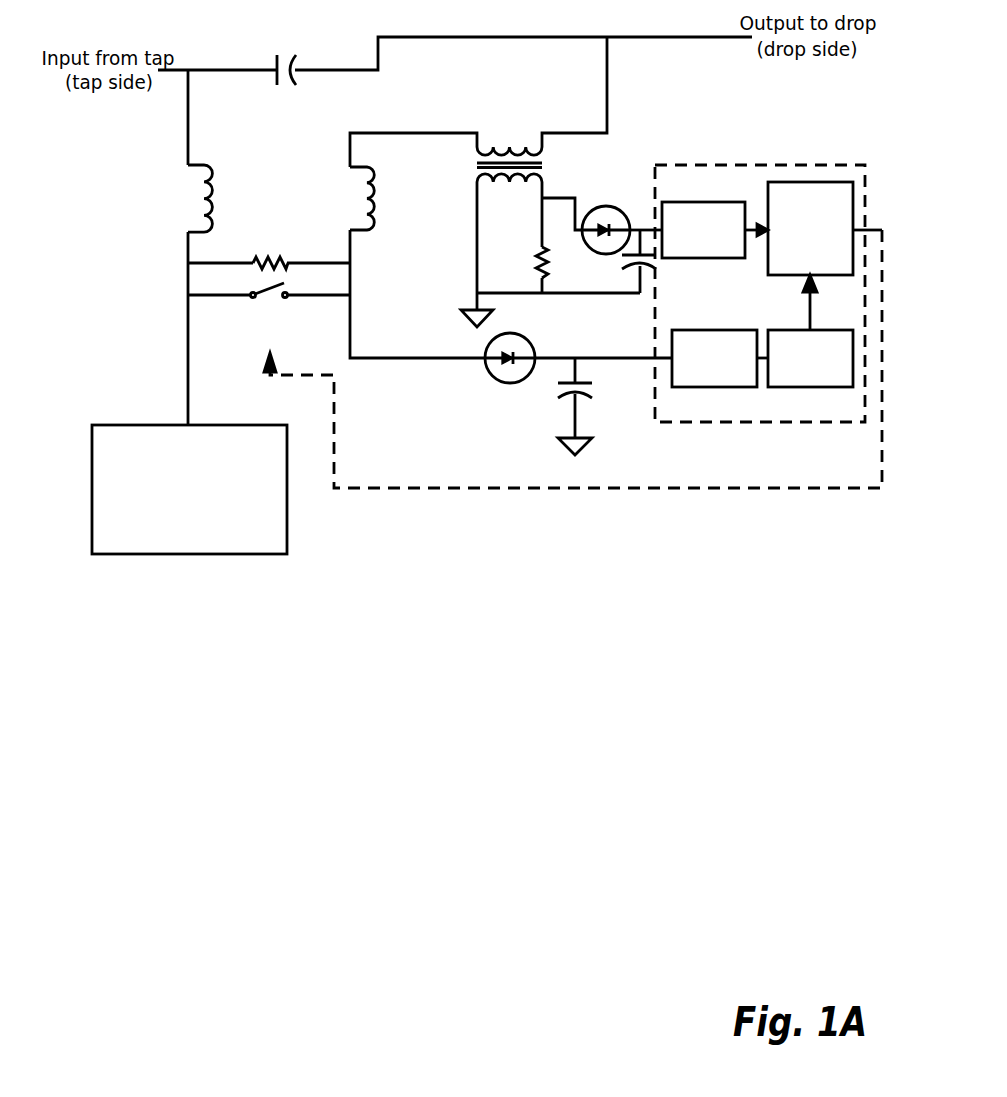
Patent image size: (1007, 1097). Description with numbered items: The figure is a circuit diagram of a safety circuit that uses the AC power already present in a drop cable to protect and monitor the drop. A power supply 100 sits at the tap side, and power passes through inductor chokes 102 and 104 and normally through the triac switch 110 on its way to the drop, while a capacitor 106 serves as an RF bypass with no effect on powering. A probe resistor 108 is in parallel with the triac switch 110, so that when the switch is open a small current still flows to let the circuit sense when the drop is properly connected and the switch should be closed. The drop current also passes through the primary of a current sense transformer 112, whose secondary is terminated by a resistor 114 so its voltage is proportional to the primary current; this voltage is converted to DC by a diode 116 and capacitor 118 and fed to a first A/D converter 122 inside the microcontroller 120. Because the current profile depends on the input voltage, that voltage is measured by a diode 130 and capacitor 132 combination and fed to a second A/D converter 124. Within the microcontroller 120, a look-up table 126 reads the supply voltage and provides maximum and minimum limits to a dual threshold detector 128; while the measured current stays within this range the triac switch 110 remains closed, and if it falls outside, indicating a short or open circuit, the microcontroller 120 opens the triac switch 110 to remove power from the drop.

The power supply 100 is at (189, 489).
The inductor choke 102 is at (221, 198).
The inductor choke 104 is at (382, 198).
The capacitor 106 is at (278, 57).
The probe resistor 108 is at (270, 252).
The triac switch 110 is at (267, 317).
The current sense transformer 112 is at (509, 145).
The resistor 114 is at (524, 262).
The diode 116 is at (606, 220).
The capacitor 118 is at (619, 270).
The microcontroller 120 is at (760, 308).
The first analog-to-digital converter 122 is at (703, 258).
The second A/D converter 124 is at (713, 330).
The look-up table 126 is at (812, 387).
The dual threshold detector 128 is at (832, 275).
The diode 130 is at (510, 371).
The capacitor 132 is at (594, 392).